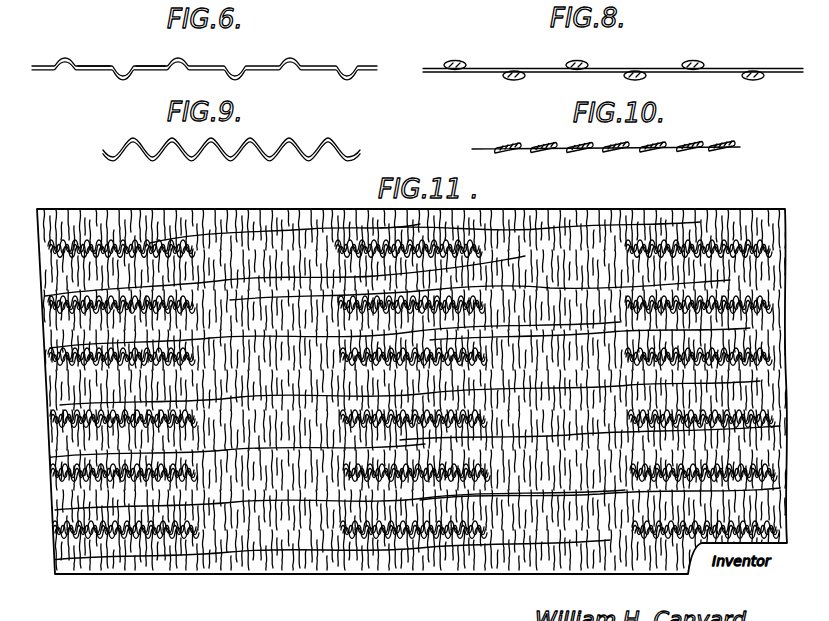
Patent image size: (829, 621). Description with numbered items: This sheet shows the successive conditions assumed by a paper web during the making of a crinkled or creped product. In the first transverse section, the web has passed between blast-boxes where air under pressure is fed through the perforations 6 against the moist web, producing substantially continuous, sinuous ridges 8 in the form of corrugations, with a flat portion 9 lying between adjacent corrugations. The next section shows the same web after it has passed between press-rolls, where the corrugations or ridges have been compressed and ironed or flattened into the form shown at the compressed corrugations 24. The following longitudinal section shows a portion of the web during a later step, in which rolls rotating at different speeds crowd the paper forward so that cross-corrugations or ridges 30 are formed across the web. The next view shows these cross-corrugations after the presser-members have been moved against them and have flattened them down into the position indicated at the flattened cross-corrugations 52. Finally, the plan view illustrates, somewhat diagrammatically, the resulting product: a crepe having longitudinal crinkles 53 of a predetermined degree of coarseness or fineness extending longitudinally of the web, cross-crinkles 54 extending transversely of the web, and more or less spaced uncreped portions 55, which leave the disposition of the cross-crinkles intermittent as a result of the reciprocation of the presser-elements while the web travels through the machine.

In FIG. 6, the perforations 6 is at (103, 0).
In FIG. 6, the sinuous ridges 8 is at (68, 58).
In FIG. 8, the sinuous ridges 8 is at (727, 0).
In FIG. 6, the flat portion 9 is at (104, 66).
In FIG. 8, the compressed corrugations 24 is at (464, 59).
In FIG. 9, the cross-corrugations 30 is at (133, 139).
In FIG. 10, the flattened cross-corrugations 52 is at (512, 153).
In FIG. 11, the longitudinal crinkles 53 is at (600, 222).
In FIG. 11, the cross-crinkles 54 is at (112, 560).
In FIG. 11, the uncreped portions 55 is at (238, 537).